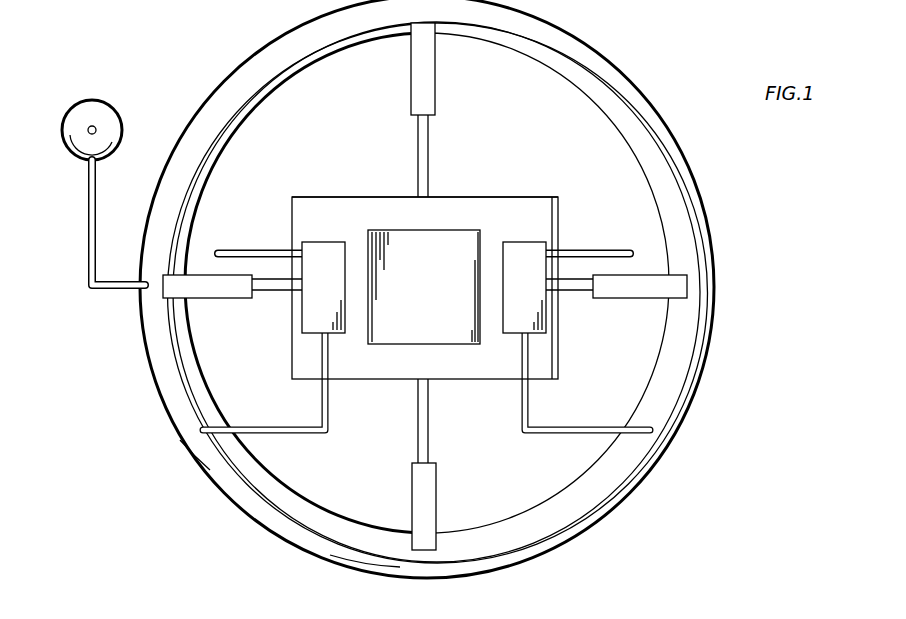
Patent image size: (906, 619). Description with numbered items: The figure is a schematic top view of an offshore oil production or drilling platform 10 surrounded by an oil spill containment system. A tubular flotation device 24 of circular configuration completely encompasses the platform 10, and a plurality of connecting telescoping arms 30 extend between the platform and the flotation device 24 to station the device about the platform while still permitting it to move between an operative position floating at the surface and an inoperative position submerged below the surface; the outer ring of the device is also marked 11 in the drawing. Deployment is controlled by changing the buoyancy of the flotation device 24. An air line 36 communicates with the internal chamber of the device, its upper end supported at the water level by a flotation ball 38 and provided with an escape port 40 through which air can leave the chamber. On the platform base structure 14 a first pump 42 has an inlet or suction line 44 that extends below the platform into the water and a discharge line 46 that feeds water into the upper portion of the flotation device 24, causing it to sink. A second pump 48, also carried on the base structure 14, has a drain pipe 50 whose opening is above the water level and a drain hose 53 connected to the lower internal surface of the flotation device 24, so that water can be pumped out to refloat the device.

The offshore oil production or drilling platform 10 is at (319, 187).
The outer ring 11 is at (617, 80).
The platform base structure 14 is at (465, 197).
The tubular flotation device 24 is at (628, 487).
The connecting telescoping arms 30 is at (411, 81).
The air line 36 is at (89, 221).
The flotation ball 38 is at (114, 102).
The escape port 40 is at (88, 127).
The first pump 42 is at (312, 322).
The inlet or suction line 44 is at (253, 250).
The discharge line 46 is at (329, 418).
The second pump 48 is at (541, 318).
The drain pipe 50 is at (600, 250).
The drain hose 53 is at (521, 412).